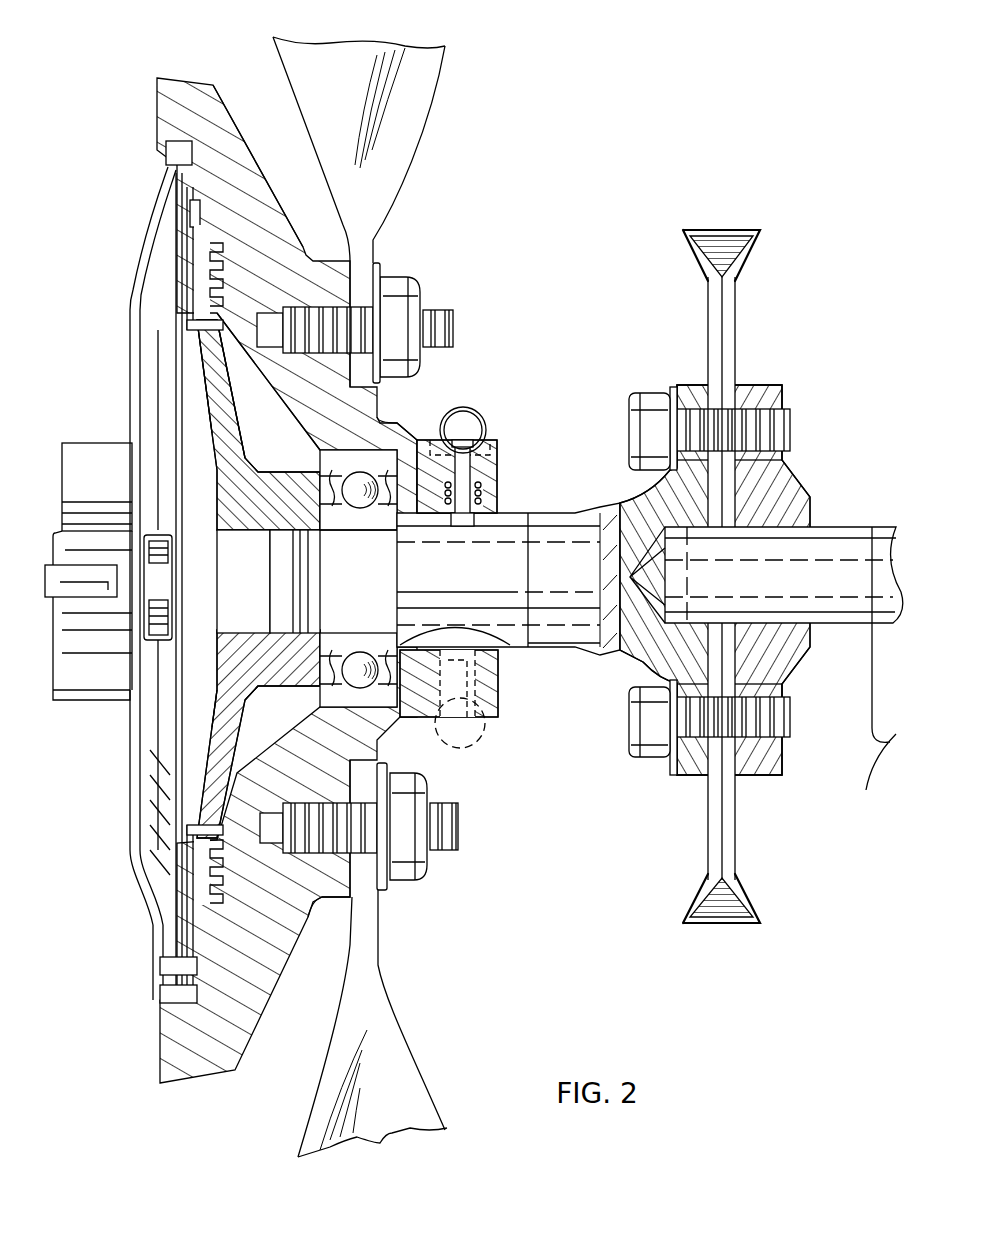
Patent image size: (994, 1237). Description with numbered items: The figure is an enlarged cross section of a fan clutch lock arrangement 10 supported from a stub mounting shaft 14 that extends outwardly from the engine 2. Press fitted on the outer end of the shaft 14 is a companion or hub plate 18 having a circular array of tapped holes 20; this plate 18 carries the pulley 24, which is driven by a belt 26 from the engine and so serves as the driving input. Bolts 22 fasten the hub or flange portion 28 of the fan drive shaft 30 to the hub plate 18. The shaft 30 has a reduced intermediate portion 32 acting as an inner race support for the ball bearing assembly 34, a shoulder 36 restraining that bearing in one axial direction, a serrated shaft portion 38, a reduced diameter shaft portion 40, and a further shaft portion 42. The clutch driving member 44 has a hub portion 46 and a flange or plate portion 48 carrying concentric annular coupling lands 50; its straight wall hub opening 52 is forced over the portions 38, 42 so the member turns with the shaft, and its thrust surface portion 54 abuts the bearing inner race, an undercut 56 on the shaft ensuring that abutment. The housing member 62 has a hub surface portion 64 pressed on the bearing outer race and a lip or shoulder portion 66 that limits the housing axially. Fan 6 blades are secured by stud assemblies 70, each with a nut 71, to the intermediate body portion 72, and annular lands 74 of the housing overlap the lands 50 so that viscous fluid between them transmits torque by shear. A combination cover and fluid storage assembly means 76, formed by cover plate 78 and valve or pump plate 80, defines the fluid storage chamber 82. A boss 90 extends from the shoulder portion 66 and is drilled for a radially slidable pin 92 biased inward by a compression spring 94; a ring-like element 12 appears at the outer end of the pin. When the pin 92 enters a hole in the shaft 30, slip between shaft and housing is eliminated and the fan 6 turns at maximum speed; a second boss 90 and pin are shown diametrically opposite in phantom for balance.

The engine 2 is at (875, 668).
The fan 6 is at (433, 52).
The fan drive assembly 10 is at (572, 84).
The retaining ring 12 is at (474, 414).
The stub mounting shaft 14 is at (840, 547).
The companion plate 18 is at (795, 483).
The tapped holes 20 is at (768, 390).
The bolts 22 is at (650, 395).
The pulley 24 is at (712, 326).
The belt 26 is at (718, 230).
The hub or flange portion 28 is at (648, 506).
The fan drive shaft 30 is at (508, 579).
The reduced intermediate portion 32 is at (335, 581).
The ball bearing assembly 34 is at (322, 462).
The shoulder 36 is at (505, 634).
The serrated shaft portion 38 is at (310, 632).
The reduced diameter shaft portion 40 is at (270, 581).
The further shaft portion 42 is at (245, 581).
The clutch driving member 44 is at (236, 704).
The hub portion 46 is at (245, 480).
The flange or plate portion 48 is at (212, 338).
The annular coupling lands 50 is at (222, 258).
The straight wall hub opening 52 is at (230, 525).
The thrust surface portion 54 is at (240, 680).
The undercut 56 is at (328, 528).
The housing member 62 is at (208, 85).
The hub surface portion 64 is at (345, 437).
The lip or shoulder portion 66 is at (398, 424).
The stud assemblies 70 is at (452, 312).
The nut 71 is at (410, 278).
The intermediate body portion 72 is at (245, 163).
The annular lands 74 is at (302, 942).
The combination cover and fluid storage assembly means 76 is at (155, 832).
The cover plate 78 is at (152, 790).
The valve or pump plate 80 is at (180, 302).
The fluid storage chamber 82 is at (158, 742).
The boss 90 is at (498, 456).
The radially slidable pin 92 is at (470, 470).
The compression spring 94 is at (482, 490).